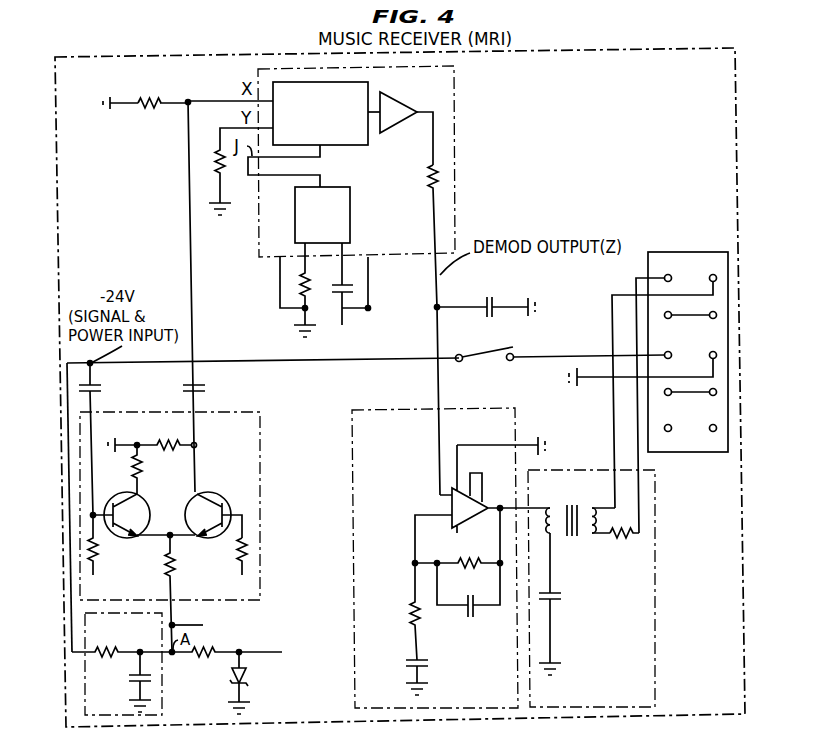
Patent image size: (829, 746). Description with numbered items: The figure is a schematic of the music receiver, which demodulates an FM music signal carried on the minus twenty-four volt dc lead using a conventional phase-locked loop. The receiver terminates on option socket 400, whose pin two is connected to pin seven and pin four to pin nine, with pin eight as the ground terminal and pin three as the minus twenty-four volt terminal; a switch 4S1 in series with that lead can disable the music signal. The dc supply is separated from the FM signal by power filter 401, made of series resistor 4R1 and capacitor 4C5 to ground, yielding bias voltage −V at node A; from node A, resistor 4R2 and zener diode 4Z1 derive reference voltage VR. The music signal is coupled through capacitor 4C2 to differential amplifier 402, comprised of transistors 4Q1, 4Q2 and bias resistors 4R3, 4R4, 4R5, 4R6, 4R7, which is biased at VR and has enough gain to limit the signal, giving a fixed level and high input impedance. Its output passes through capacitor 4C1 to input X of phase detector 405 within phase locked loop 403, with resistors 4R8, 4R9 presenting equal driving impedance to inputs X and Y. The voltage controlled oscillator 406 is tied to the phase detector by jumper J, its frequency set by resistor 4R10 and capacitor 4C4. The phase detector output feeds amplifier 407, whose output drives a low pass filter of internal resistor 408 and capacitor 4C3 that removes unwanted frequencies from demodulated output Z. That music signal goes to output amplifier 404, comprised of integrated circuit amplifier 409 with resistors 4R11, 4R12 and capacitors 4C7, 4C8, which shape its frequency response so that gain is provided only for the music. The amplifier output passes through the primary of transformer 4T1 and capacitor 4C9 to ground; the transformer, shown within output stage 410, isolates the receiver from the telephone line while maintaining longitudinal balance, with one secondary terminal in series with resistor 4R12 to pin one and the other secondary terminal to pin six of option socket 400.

The option socket 400 is at (681, 251).
The power filter 401 is at (163, 704).
The differential amplifier 402 is at (260, 498).
The phase locked loop 403 is at (455, 142).
The output amplifier 404 is at (354, 550).
The phase detector 405 is at (346, 146).
The VCO 406 is at (350, 213).
The amplifier 407 is at (398, 97).
The internal resistor 408 is at (430, 178).
The integrated circuit amplifier 409 is at (450, 507).
The output transformer circuit 410 is at (656, 607).
The series resistor 4R1 is at (97, 648).
The resistor 4R2 is at (200, 662).
The bias resistor 4R3 is at (99, 550).
The bias resistor 4R4 is at (238, 549).
The bias resistor 4R5 is at (175, 570).
The bias resistor 4R6 is at (142, 467).
The bias resistor 4R7 is at (161, 441).
The resistor 4R8 is at (150, 112).
The resistor 4R9 is at (217, 158).
The resistor 4R10 is at (298, 288).
The resistor 4R11 is at (462, 558).
The resistor 4R12 is at (410, 616).
The capacitor 4C1 is at (206, 388).
The capacitor 4C2 is at (102, 389).
The capacitor 4C3 is at (489, 297).
The capacitor 4C4 is at (356, 292).
The capacitor 4C5 is at (134, 677).
The capacitor 4C7 is at (430, 663).
The capacitor 4C8 is at (470, 620).
The capacitor 4C9 is at (562, 596).
The transistor 4Q1 is at (116, 500).
The transistor 4Q2 is at (224, 493).
The switch 4S1 is at (482, 351).
The transformer 4T1 is at (580, 511).
The zener diode 4Z1 is at (248, 678).